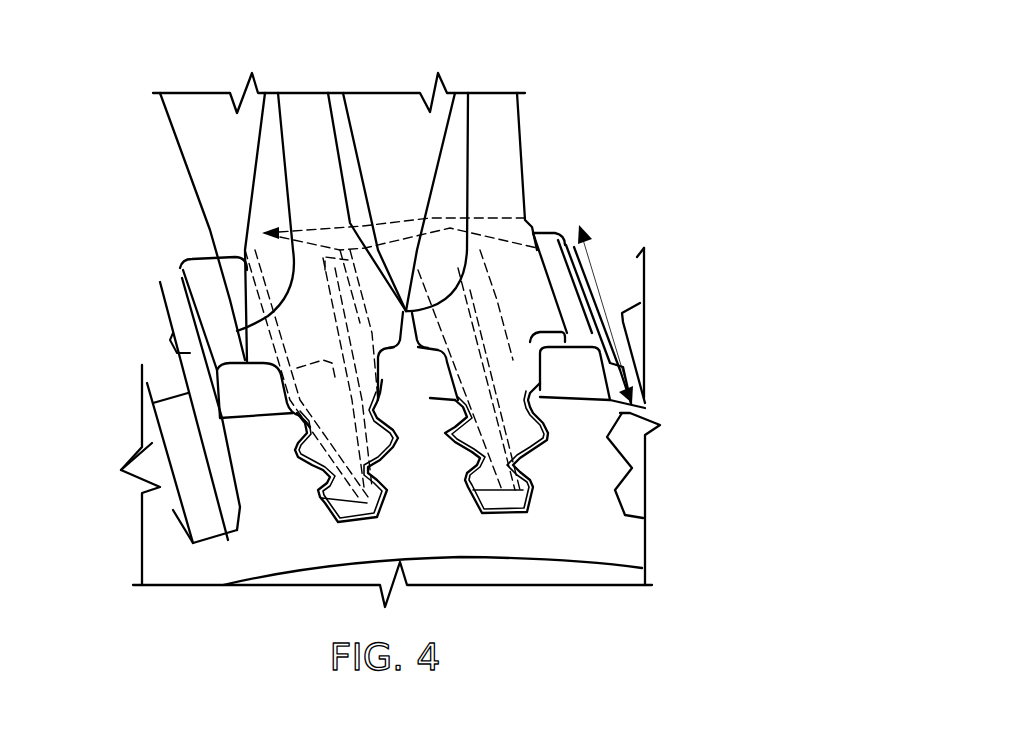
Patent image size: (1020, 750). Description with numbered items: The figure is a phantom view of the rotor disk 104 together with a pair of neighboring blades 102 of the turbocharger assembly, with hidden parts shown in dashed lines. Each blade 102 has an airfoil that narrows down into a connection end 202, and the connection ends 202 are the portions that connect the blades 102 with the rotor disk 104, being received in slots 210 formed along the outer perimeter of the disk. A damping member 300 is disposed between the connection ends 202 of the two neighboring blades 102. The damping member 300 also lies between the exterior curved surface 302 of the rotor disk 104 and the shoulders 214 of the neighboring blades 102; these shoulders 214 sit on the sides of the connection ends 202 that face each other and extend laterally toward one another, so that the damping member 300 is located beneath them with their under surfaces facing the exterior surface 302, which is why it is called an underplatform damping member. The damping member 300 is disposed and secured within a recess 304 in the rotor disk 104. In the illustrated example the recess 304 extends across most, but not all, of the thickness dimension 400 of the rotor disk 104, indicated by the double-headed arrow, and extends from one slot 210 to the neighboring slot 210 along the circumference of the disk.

The blade 102 is at (303, 89).
The rotor disk 104 is at (628, 542).
The connection end 202 is at (200, 164).
The slot 210 is at (615, 271).
The shoulder 214 is at (372, 224).
The damping member 300 is at (373, 287).
The exterior curved surface 302 is at (580, 377).
The recess 304 is at (158, 280).
The thickness dimension 400 is at (597, 250).